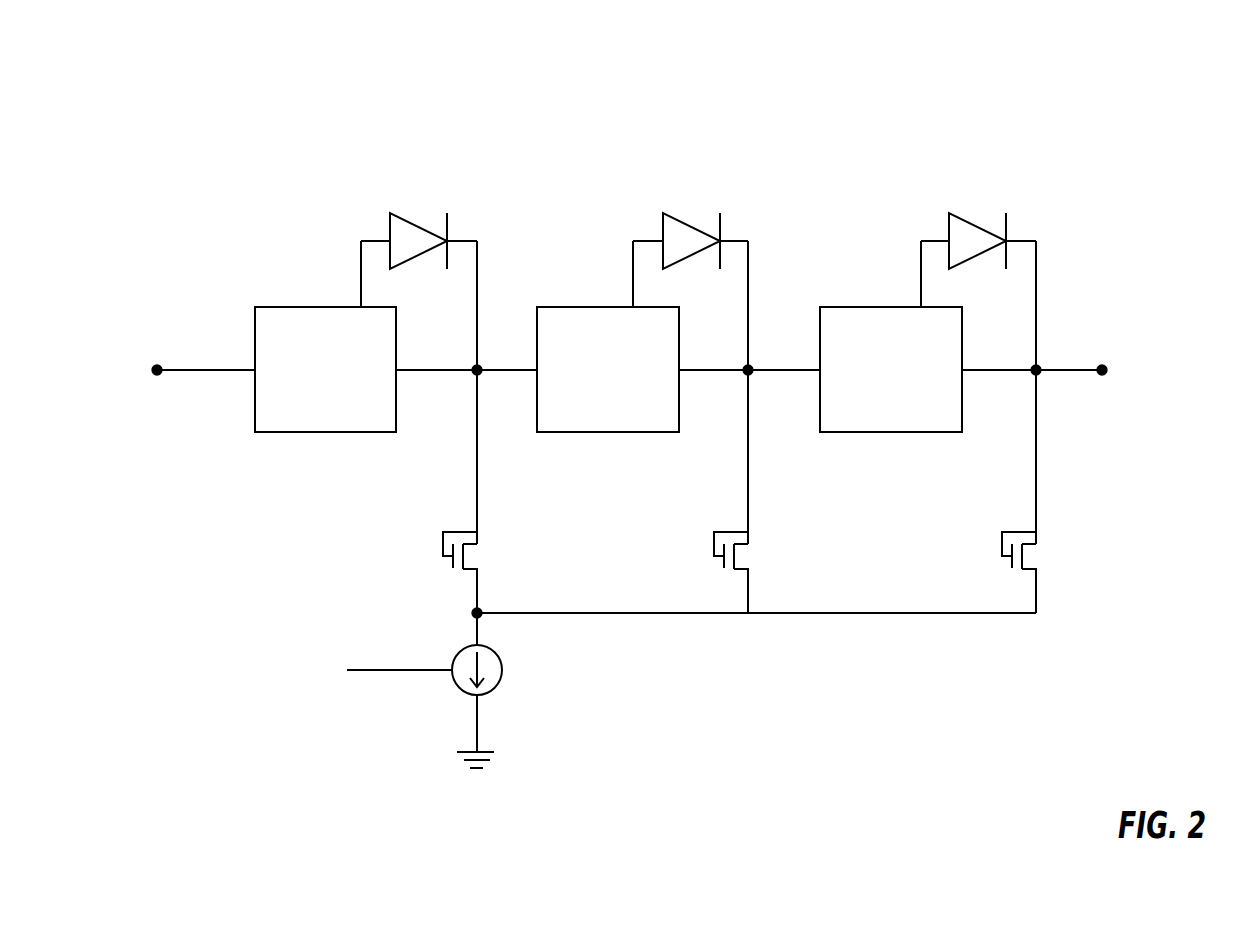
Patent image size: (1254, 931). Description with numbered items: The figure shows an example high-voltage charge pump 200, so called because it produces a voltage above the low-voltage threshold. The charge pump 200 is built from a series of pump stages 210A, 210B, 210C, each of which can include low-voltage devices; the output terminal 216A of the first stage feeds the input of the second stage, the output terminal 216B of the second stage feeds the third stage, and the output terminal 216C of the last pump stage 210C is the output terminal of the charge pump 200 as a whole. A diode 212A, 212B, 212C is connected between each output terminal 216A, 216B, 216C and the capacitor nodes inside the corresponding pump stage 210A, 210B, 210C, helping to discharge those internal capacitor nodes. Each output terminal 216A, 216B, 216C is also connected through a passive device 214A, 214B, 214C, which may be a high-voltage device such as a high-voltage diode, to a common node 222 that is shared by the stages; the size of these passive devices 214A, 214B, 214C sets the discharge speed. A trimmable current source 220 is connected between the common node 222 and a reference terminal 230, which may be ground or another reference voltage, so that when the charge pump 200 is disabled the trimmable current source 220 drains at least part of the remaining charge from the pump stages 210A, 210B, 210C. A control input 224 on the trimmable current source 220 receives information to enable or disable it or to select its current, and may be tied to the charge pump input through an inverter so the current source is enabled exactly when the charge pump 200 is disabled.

The high-voltage charge pump 200 is at (1149, 72).
The pump stage 210A is at (272, 307).
The pump stage 210B is at (553, 307).
The pump stage 210C is at (836, 307).
The diode 212A is at (390, 213).
The diode 212B is at (663, 213).
The diode 212C is at (949, 213).
The passive device 214A is at (478, 532).
The passive device 214B is at (749, 530).
The passive device 214C is at (1037, 530).
The output terminal 216A is at (477, 370).
The output terminal 216B is at (748, 370).
The output terminal 216C is at (1036, 370).
The trimmable current source 220 is at (493, 652).
The common node 222 is at (480, 612).
The control input 224 is at (375, 670).
The reference terminal 230 is at (495, 752).